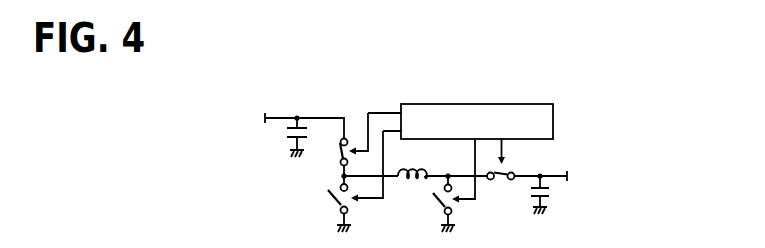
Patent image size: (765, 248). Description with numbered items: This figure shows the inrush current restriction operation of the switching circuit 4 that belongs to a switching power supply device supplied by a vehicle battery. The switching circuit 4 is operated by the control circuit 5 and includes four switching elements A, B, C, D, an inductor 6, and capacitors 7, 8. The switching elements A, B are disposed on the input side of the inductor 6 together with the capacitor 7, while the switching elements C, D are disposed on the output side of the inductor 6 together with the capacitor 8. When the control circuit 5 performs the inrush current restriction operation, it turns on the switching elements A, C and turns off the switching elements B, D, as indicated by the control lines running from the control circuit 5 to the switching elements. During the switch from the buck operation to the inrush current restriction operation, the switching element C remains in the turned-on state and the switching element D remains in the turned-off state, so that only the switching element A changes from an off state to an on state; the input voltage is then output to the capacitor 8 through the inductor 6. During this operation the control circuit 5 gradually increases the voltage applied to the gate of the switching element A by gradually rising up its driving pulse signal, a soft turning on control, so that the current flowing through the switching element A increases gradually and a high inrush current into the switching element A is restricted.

The switching circuit 4 is at (407, 88).
The control circuit 5 is at (450, 103).
The inductor 6 is at (418, 168).
The capacitor 7 is at (283, 133).
The capacitor 8 is at (552, 196).
The switching element A is at (337, 145).
The switching element B is at (327, 195).
The switching element C is at (503, 181).
The switching element D is at (435, 202).